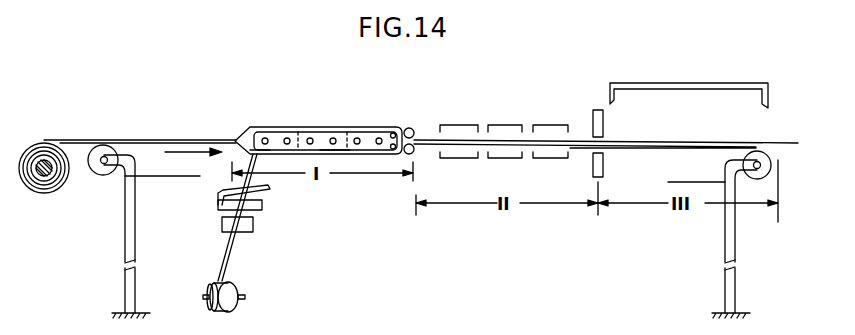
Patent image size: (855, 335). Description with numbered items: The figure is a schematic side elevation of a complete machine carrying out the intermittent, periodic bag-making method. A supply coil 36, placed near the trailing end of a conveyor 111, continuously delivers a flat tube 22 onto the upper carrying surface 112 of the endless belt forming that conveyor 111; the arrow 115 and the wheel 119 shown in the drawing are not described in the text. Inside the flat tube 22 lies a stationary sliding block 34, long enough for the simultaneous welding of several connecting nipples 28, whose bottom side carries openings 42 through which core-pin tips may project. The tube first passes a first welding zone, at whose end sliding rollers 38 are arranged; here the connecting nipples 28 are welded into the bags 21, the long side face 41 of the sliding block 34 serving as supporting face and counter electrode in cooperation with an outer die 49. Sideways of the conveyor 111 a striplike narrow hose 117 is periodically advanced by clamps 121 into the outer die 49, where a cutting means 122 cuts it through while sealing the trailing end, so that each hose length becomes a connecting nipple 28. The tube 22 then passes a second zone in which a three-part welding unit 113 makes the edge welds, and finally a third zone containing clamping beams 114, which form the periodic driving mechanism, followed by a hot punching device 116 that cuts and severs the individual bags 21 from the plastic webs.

The upper carrying surface 112 is at (130, 140).
The flat tube 22 is at (145, 138).
The direction of travel arrow 115 is at (188, 150).
The sliding block 34 is at (281, 140).
The connecting nipples 28 is at (332, 138).
The openings 42 is at (336, 140).
The bags 21 is at (384, 128).
The sliding rollers 38 is at (411, 130).
The welding unit 113 is at (465, 124).
The hot punching device 116 is at (668, 87).
The clamping beams 114 is at (604, 168).
The supply coil 36 is at (57, 185).
The conveyor 111 is at (152, 168).
The striplike narrow hose 117 is at (222, 253).
The outer die 49 is at (258, 154).
The supporting face 41 is at (333, 154).
The cutting means 122 is at (259, 210).
The clamps 121 is at (248, 230).
The eccentric wheel 119 is at (235, 308).